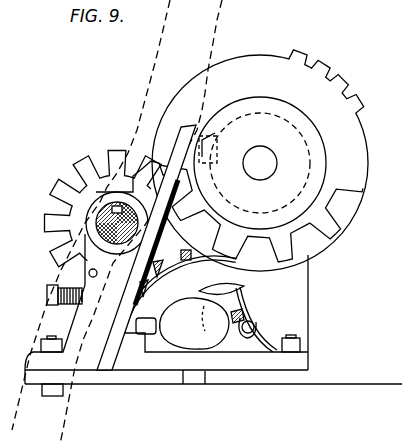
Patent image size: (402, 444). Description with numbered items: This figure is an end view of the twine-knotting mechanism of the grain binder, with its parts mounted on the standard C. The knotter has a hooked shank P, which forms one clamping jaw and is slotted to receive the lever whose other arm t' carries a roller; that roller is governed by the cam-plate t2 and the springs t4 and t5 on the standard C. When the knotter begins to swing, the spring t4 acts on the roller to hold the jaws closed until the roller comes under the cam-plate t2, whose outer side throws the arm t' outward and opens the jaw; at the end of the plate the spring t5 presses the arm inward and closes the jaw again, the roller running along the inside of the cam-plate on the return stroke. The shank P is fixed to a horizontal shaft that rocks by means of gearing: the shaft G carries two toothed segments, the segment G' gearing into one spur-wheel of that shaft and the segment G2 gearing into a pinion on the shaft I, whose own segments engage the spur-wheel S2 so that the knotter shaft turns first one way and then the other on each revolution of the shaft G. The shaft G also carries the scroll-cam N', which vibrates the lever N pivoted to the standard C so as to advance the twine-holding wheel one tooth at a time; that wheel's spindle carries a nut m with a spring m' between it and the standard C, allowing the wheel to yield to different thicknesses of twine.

The shaft G is at (260, 163).
The toothed segment G' is at (260, 160).
The toothed segment G2 is at (262, 213).
The lever N is at (111, 209).
The scroll-cam N' is at (260, 163).
The shaft I is at (181, 256).
The spur-wheel S2 is at (191, 255).
The arm of lever T t' is at (146, 317).
The cam-plate t2 is at (244, 299).
The spring t4 is at (180, 290).
The spring t5 is at (254, 325).
The hooked shank P is at (194, 323).
The nut m is at (53, 287).
The spring m' is at (65, 306).
The standard C is at (81, 322).